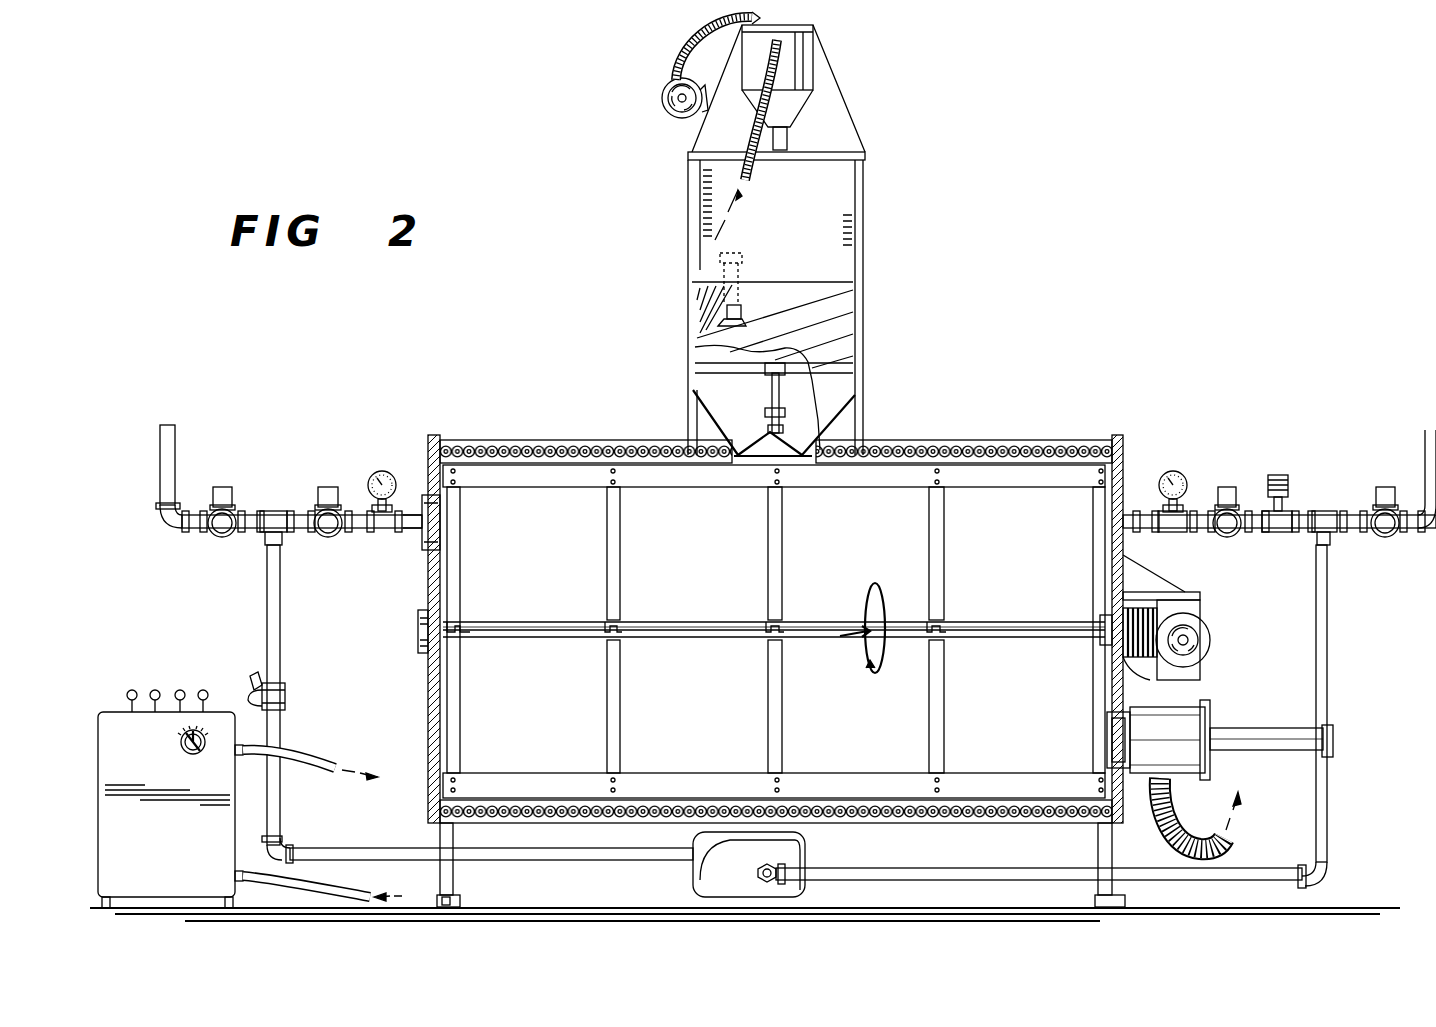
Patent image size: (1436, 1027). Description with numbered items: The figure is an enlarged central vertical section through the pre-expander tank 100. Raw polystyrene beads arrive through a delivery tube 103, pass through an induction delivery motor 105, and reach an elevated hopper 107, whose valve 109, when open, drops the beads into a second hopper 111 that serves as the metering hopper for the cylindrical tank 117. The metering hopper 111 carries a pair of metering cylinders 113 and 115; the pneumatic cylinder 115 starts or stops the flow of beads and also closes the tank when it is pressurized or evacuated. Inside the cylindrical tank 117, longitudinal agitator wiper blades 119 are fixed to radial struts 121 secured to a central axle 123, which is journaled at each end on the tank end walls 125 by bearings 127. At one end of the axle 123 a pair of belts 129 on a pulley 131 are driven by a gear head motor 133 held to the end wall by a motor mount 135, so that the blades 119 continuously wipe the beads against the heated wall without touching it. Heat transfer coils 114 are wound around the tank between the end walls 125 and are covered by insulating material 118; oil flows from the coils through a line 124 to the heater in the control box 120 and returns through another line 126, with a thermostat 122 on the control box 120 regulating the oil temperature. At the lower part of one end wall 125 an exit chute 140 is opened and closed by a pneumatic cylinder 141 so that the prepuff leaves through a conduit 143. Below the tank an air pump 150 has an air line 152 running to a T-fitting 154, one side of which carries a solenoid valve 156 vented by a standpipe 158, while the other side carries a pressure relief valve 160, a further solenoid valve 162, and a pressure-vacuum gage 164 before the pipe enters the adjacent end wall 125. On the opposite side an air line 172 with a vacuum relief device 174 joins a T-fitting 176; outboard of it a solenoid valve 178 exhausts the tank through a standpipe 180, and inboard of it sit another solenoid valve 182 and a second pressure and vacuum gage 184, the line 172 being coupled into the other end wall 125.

The pre-expander tank 100 is at (968, 356).
The delivery tube 103 is at (752, 183).
The induction delivery motor 105 is at (668, 115).
The elevated hopper 107 is at (813, 77).
The valve 109 is at (797, 135).
The second hopper 111 is at (865, 250).
The metering cylinder 113 is at (745, 268).
The heat transfer coils 114 is at (652, 452).
The pneumatic cylinder 115 is at (772, 402).
The cylindrical tank 117 is at (560, 440).
The insulating material 118 is at (925, 440).
The agitator wiper blades 119 is at (516, 480).
The control box 120 is at (118, 720).
The radial struts 121 is at (622, 626).
The thermostat 122 is at (184, 755).
The central axle 123 is at (985, 630).
The line 124 is at (378, 885).
The tank end walls 125 is at (432, 450).
The line 126 is at (312, 768).
The bearings 127 is at (420, 632).
The belts 129 is at (1133, 658).
The pulley 131 is at (1135, 610).
The gear head motor 133 is at (1212, 636).
The motor mount 135 is at (1182, 600).
The exit chute 140 is at (1182, 718).
The pneumatic cylinder 141 is at (1262, 752).
The conduit 143 is at (1182, 822).
The air pump 150 is at (793, 858).
The air line 152 is at (946, 860).
The T-fitting 154 is at (1322, 512).
The solenoid valve 156 is at (1388, 540).
The standpipe 158 is at (1435, 448).
The pressure relief valve 160 is at (1290, 475).
The solenoid valve 162 is at (1228, 537).
The pressure-vacuum gage 164 is at (1183, 470).
The air line 172 is at (513, 855).
The vacuum relief device 174 is at (248, 680).
The T-fitting 176 is at (272, 512).
The solenoid valve 178 is at (218, 535).
The standpipe 180 is at (162, 455).
The solenoid valve 182 is at (327, 540).
The pressure and vacuum gage 184 is at (378, 475).